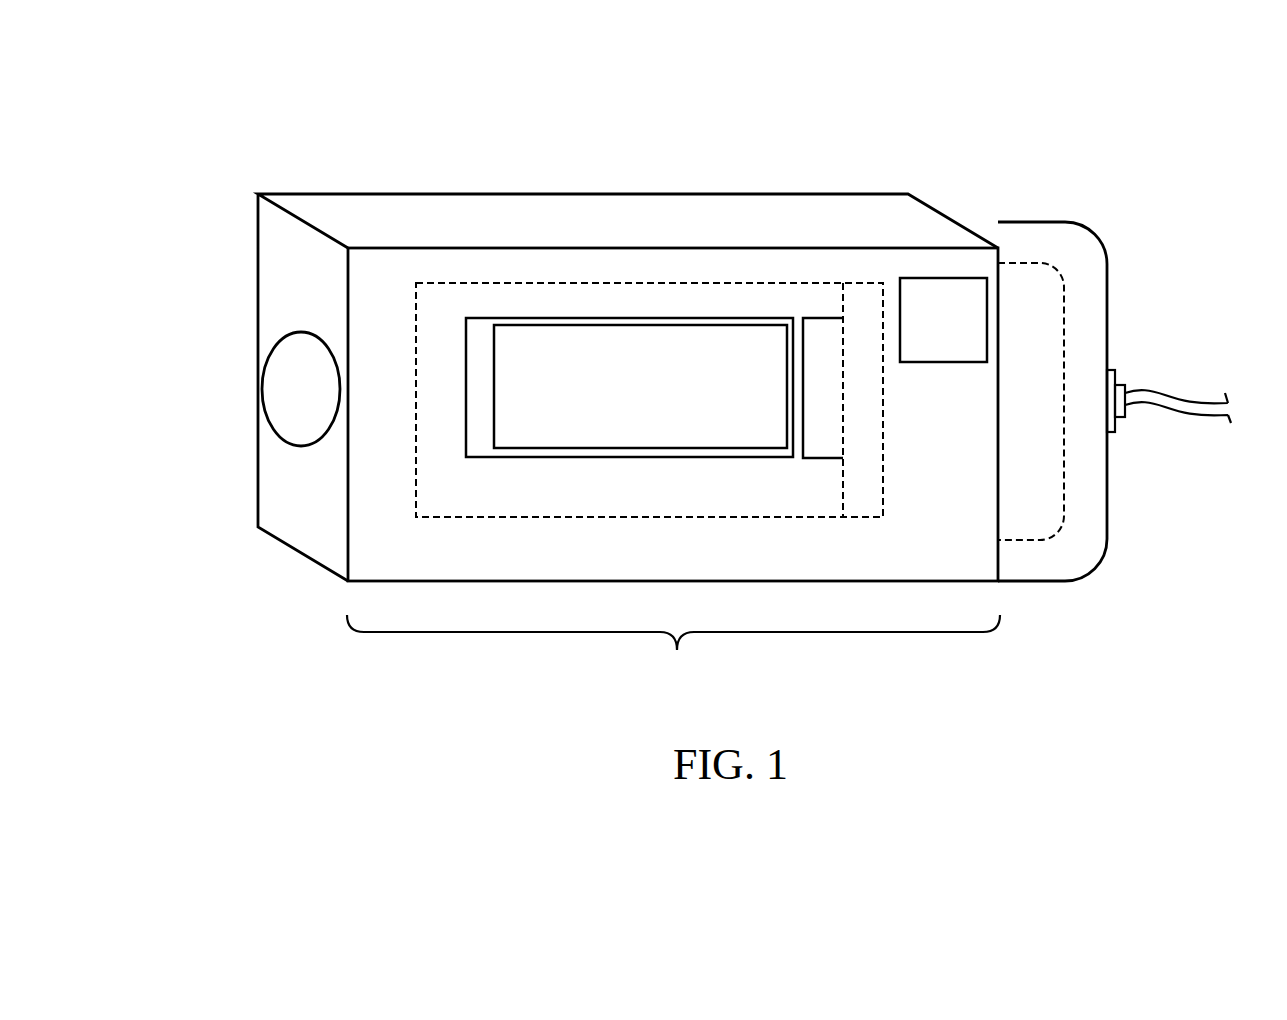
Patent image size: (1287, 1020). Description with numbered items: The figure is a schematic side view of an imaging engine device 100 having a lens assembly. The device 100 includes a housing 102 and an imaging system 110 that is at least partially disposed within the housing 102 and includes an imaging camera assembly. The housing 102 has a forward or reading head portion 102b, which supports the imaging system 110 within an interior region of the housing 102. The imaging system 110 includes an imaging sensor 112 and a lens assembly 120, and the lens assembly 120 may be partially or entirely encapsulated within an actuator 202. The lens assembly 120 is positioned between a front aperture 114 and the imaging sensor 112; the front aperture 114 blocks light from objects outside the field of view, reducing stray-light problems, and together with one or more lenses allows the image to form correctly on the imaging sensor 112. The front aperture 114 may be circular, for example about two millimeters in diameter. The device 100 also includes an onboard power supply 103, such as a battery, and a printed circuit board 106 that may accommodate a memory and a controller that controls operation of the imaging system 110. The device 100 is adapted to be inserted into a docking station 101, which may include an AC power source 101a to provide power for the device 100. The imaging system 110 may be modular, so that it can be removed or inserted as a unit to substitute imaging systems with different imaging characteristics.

The imaging engine device 100 is at (254, 128).
The docking station 101 is at (1096, 233).
The AC power source 101a is at (1174, 400).
The housing 102 is at (940, 212).
The reading head portion 102b is at (673, 648).
The onboard power supply 103 is at (970, 334).
The printed circuit board 106 is at (865, 288).
The imaging system 110 is at (650, 517).
The imaging sensor 112 is at (815, 323).
The front aperture 114 is at (270, 389).
The lens assembly 120 is at (614, 322).
The actuator 202 is at (477, 323).